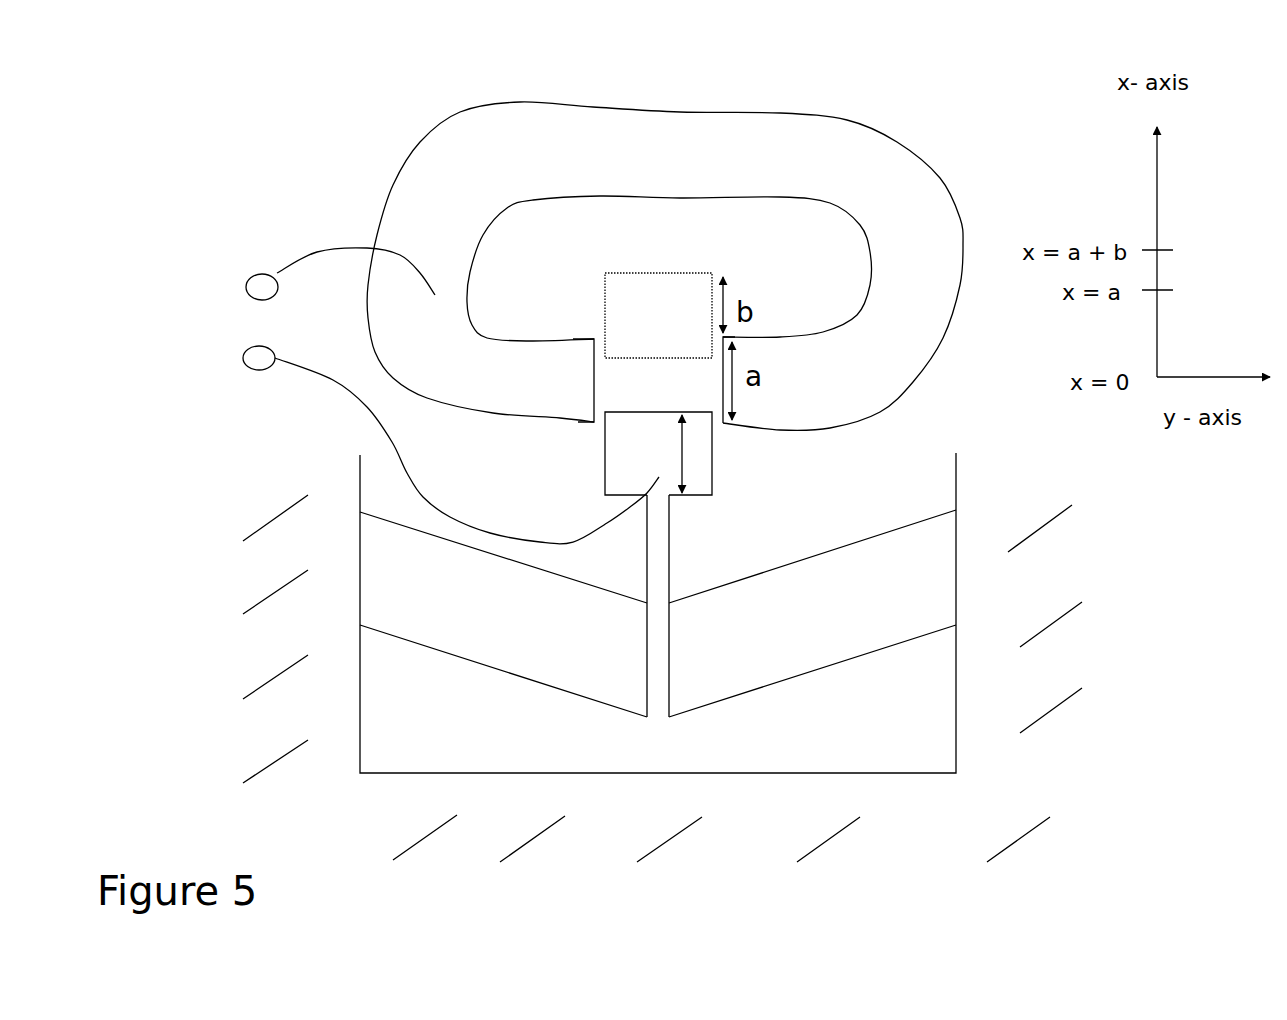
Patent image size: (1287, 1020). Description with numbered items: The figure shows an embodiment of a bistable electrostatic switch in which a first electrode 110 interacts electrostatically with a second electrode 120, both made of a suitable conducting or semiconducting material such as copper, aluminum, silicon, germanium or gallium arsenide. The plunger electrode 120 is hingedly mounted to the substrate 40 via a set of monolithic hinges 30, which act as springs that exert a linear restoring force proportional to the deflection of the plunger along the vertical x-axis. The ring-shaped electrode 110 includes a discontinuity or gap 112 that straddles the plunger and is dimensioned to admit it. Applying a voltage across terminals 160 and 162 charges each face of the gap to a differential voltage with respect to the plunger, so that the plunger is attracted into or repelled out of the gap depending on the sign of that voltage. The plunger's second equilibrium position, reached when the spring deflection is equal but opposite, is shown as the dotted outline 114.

The monolithic hinges 30 is at (493, 553).
The substrate 40 is at (627, 657).
The first electrode 110 is at (777, 400).
The discontinuity 112 is at (638, 385).
The dotted outline 114 is at (672, 290).
The second electrode 120 is at (637, 455).
The terminal 160 is at (245, 298).
The terminal 162 is at (257, 370).